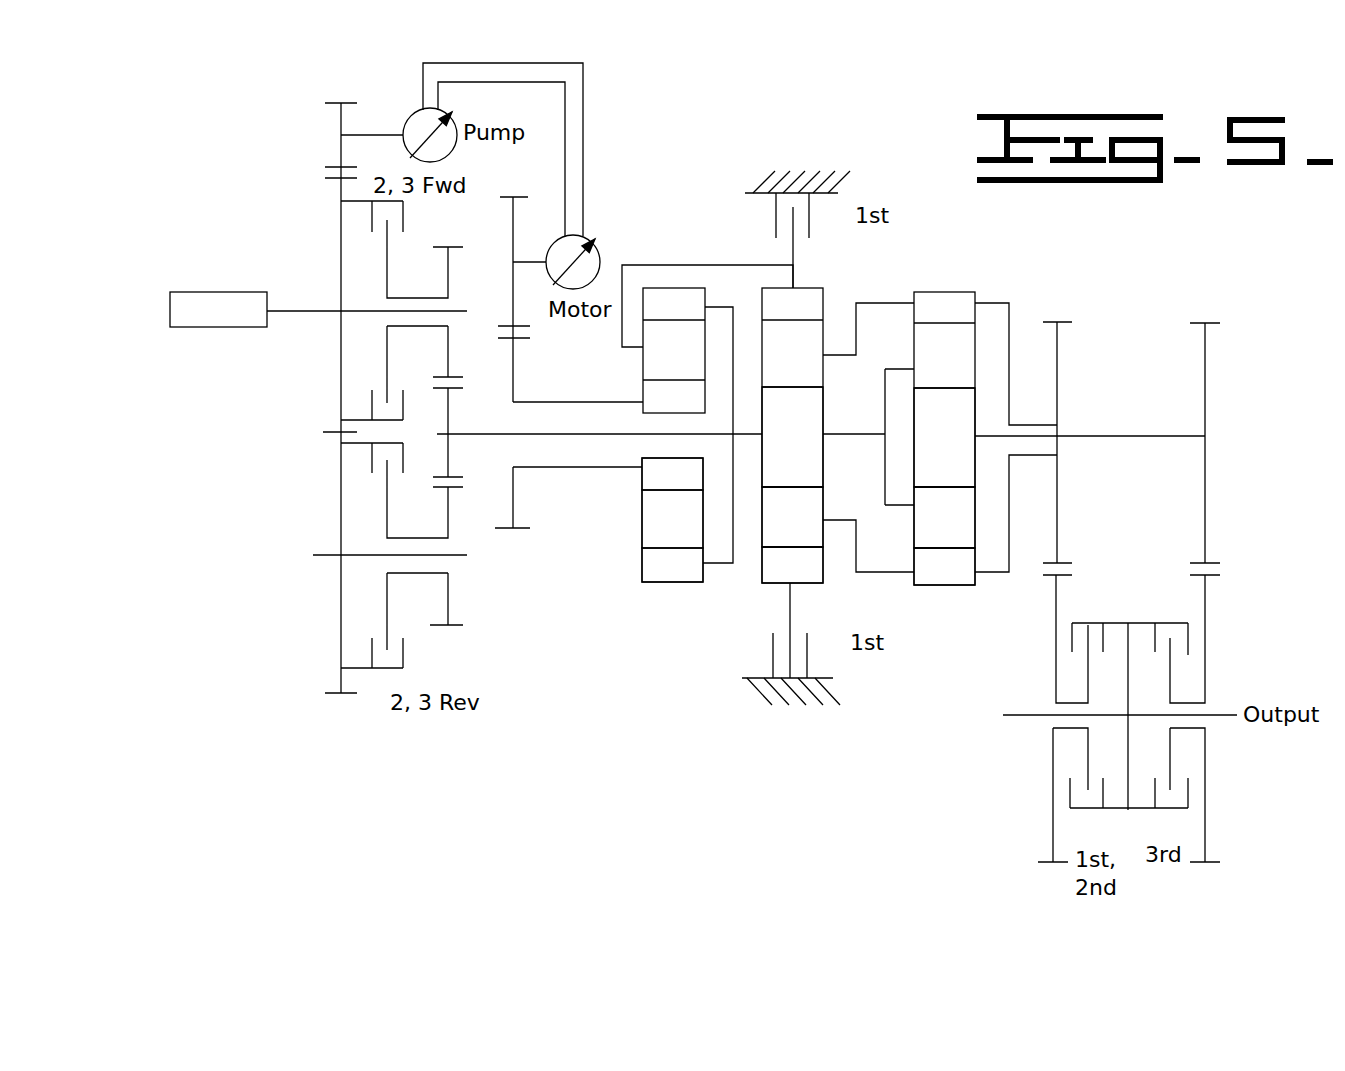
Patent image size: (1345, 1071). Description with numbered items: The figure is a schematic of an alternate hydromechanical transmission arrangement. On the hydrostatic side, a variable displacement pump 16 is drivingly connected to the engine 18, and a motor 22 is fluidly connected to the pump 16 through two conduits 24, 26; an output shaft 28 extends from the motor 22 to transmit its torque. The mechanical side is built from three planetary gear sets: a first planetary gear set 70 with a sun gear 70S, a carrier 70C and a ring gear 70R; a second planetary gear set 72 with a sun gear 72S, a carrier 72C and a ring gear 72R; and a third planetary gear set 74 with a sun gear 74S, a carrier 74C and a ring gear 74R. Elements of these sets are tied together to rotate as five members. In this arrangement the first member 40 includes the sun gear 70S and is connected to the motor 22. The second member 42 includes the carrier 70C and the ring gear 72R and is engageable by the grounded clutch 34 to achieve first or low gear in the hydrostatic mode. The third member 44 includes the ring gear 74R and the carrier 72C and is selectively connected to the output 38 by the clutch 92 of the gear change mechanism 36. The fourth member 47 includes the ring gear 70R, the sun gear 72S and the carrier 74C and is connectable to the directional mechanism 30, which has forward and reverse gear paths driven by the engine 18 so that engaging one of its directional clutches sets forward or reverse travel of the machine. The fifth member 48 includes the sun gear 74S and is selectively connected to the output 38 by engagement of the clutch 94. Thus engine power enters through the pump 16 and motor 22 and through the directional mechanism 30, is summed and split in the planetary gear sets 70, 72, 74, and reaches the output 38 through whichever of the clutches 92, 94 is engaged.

The variable displacement pump 16 is at (407, 122).
The engine 18 is at (233, 292).
The motor 22 is at (602, 258).
The conduit 24 is at (565, 130).
The conduit 26 is at (583, 180).
The output shaft 28 is at (542, 256).
The directional mechanism 30 is at (318, 447).
The grounded clutch 34 is at (810, 221).
The gear change mechanism 36 is at (1052, 871).
The output 38 is at (1228, 715).
The first member 40 is at (618, 402).
The second member 42 is at (724, 265).
The third member 44 is at (984, 304).
The fourth member 47 is at (504, 433).
The fifth member 48 is at (1172, 436).
The first planetary gear set 70 is at (599, 589).
The sun gear 70S is at (652, 473).
The carrier 70C is at (648, 519).
The ring gear 70R is at (658, 576).
The second planetary gear set 72 is at (818, 496).
The sun gear 72S is at (812, 427).
The carrier 72C is at (812, 513).
The ring gear 72R is at (815, 562).
The third planetary gear set 74 is at (985, 494).
The sun gear 74S is at (944, 437).
The carrier 74C is at (944, 517).
The ring gear 74R is at (968, 580).
The first output clutch 92 is at (1092, 623).
The second output clutch 94 is at (1178, 623).